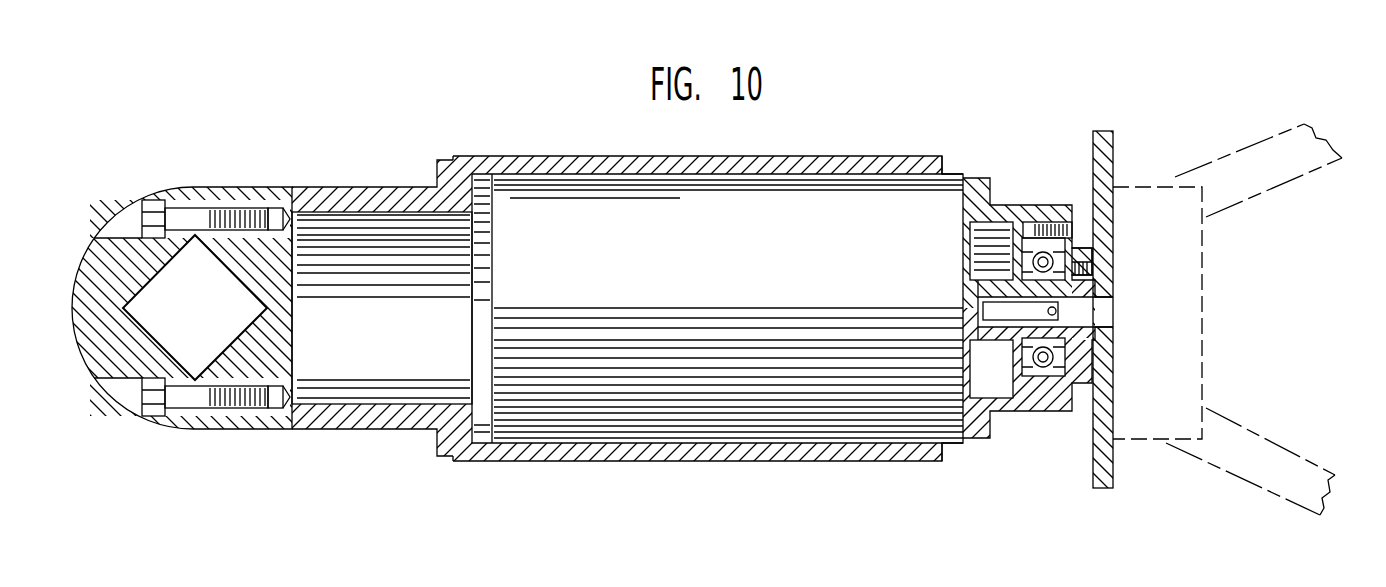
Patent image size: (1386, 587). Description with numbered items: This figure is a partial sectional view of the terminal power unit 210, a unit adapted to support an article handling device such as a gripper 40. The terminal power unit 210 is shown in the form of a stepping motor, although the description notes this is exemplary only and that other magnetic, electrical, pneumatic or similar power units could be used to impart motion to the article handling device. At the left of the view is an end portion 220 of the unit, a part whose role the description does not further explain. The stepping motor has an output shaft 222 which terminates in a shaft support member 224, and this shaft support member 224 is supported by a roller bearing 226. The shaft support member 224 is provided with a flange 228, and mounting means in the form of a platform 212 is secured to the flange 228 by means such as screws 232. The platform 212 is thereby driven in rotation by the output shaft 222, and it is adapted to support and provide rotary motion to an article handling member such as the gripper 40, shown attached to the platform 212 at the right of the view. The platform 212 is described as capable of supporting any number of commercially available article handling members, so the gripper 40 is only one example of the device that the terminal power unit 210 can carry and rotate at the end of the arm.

The gripper 40 is at (1162, 184).
The terminal power unit 210 is at (720, 162).
The platform 212 is at (1102, 131).
The end cap tube 220 is at (322, 195).
The output shaft 222 is at (983, 310).
The shaft support member 224 is at (1020, 338).
The roller bearing 226 is at (1037, 373).
The flange 228 is at (1088, 240).
The screws 232 is at (1109, 259).